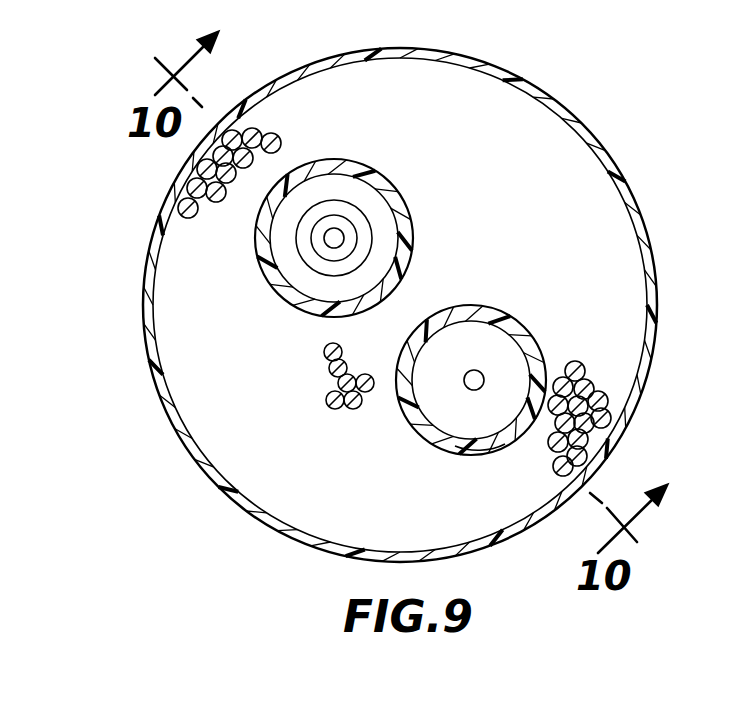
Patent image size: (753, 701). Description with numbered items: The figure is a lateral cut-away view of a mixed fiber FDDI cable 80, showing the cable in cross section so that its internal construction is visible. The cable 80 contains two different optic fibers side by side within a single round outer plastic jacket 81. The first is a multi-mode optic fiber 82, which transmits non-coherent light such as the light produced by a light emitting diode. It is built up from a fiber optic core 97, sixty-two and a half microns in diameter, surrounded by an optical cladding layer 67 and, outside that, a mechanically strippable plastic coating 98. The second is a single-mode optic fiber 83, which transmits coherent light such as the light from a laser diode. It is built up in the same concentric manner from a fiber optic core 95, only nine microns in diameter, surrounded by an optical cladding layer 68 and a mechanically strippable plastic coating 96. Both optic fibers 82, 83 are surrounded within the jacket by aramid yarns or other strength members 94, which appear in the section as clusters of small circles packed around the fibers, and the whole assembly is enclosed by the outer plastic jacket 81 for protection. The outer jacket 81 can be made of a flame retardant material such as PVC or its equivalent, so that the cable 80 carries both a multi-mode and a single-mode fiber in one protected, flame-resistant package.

The mixed fiber cable 80 is at (598, 126).
The outer plastic jacket 81 is at (630, 195).
The optic fiber 82 is at (418, 251).
The optic fiber 83 is at (510, 302).
The optical cladding layer 67 is at (354, 190).
The optical cladding layer 68 is at (447, 412).
The strength members 94 is at (281, 143).
The fiber optic core 95 is at (484, 374).
The mechanically strippable plastic coating 96 is at (464, 448).
The fiber optic core 97 is at (320, 254).
The mechanically strippable plastic coating 98 is at (397, 203).